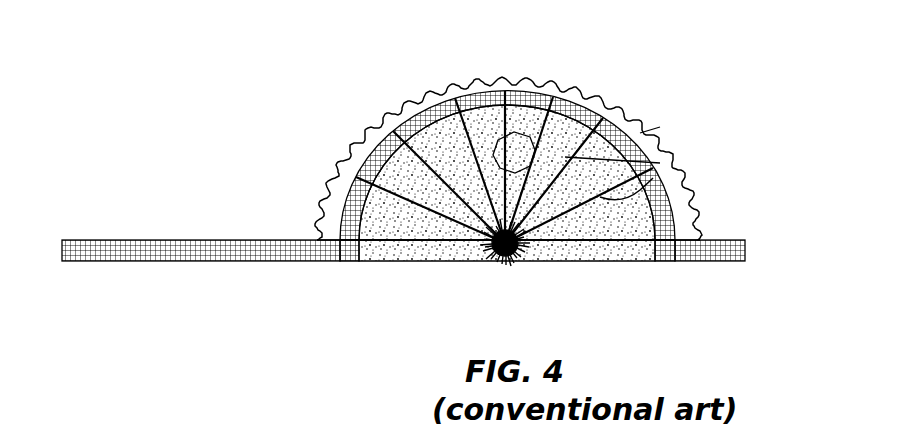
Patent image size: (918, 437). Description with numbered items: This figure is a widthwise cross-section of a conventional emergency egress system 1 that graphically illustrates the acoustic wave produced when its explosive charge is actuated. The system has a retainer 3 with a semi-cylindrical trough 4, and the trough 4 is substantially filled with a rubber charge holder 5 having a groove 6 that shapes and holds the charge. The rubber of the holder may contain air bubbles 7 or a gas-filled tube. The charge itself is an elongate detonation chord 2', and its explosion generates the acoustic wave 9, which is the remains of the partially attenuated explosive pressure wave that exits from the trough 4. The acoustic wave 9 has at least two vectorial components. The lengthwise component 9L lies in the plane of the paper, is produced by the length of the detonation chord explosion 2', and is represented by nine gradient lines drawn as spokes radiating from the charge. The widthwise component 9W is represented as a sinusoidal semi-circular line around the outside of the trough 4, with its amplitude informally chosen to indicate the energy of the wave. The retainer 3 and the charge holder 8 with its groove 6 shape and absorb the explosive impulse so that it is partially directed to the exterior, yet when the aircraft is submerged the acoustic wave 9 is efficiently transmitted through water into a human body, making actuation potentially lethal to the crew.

The emergency egress system 1 is at (326, 280).
The elongate charge 2' is at (462, 302).
The retainer 3 is at (213, 250).
The semi-cylindrical trough 4 is at (350, 207).
The rubber charge holder 5 is at (398, 167).
The groove 6 is at (514, 265).
The air bubbles 7 is at (520, 140).
The charge holder 8 is at (563, 137).
The acoustic wave 9 is at (693, 160).
The widthwise component 9W is at (640, 133).
The lengthwise component 9L is at (660, 163).